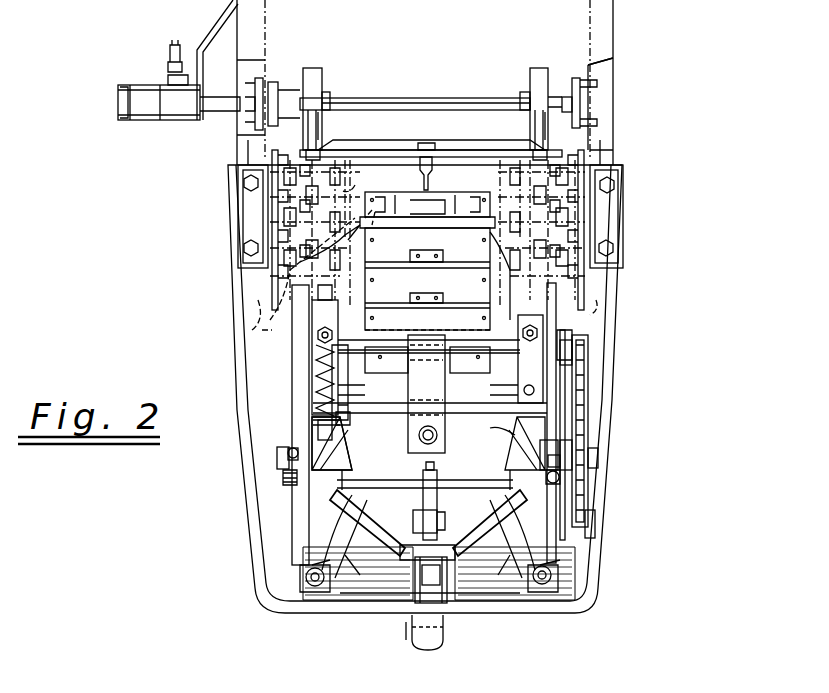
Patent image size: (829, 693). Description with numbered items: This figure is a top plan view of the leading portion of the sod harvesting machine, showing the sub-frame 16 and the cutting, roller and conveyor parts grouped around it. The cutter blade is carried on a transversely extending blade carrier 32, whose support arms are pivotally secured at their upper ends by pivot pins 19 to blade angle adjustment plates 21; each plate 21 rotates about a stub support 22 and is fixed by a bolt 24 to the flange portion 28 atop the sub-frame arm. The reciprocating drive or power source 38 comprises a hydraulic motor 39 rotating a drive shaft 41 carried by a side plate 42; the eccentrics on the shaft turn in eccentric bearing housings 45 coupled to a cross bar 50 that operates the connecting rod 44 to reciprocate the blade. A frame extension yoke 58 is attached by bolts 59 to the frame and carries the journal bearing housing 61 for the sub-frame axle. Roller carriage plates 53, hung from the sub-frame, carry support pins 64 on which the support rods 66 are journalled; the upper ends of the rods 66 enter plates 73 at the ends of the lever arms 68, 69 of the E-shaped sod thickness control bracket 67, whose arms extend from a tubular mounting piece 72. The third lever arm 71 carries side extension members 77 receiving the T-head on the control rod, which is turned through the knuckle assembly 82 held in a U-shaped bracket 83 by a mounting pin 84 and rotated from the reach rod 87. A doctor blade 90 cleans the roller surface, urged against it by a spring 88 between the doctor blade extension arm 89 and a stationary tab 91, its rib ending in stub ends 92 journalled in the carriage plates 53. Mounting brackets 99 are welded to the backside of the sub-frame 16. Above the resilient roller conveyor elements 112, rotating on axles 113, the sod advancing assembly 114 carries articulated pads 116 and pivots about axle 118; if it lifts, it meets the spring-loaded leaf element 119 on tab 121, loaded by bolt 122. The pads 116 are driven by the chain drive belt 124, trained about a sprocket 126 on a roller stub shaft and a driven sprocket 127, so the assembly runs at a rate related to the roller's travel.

The sub-frame 16 is at (395, 590).
The pivot pins 19 is at (277, 458).
The blade angle adjustment plate 21 is at (530, 450).
The stub supports 22 is at (290, 478).
The bolts 24 is at (288, 452).
The flange portion 28 is at (312, 480).
The blade carrier 32 is at (300, 262).
The reciprocating drive or power source 38 is at (147, 36).
The hydraulic motor 39 is at (178, 122).
The drive shaft 41 is at (440, 100).
The side plate 42 is at (262, 325).
The connecting rod 44 is at (436, 170).
The eccentric bearing housings 45 is at (312, 68).
The cross bar 50 is at (448, 140).
The roller carriage plates 53 is at (300, 565).
The frame extension yoke 58 is at (250, 576).
The bolts 59 is at (250, 247).
The journal bearing housing 61 is at (405, 645).
The support pins 64 is at (330, 600).
The support rods 66 is at (306, 577).
The sod thickness control bracket 67 is at (380, 450).
The lever arm 68 is at (462, 580).
The lever arm 69 is at (375, 560).
The lever arm 71 is at (420, 498).
The tubular mounting piece 72 is at (392, 470).
The plates 73 is at (345, 590).
The side extension members 77 is at (440, 495).
The knuckle assembly 82 is at (440, 615).
The U-shaped bracket 83 is at (422, 585).
The mounting pin 84 is at (415, 585).
The reach rod 87 is at (430, 485).
The spring 88 is at (340, 372).
The doctor blade extension arm 89 is at (348, 410).
The doctor blade 90 is at (462, 410).
The stationary tab 91 is at (340, 292).
The stub ends 92 is at (395, 415).
The mounting brackets 99 is at (300, 408).
The roller conveyor elements 112 is at (490, 249).
The axles 113 is at (372, 200).
The sod advancing assembly 114 is at (478, 184).
The articulated pads 116 is at (408, 258).
The axle 118 is at (515, 385).
The spring-loaded leaf element 119 is at (440, 393).
The tab 121 is at (545, 445).
The bolt 122 is at (435, 465).
The chain drive belt 124 is at (595, 525).
The sprocket 126 is at (598, 462).
The driven sprocket 127 is at (588, 355).